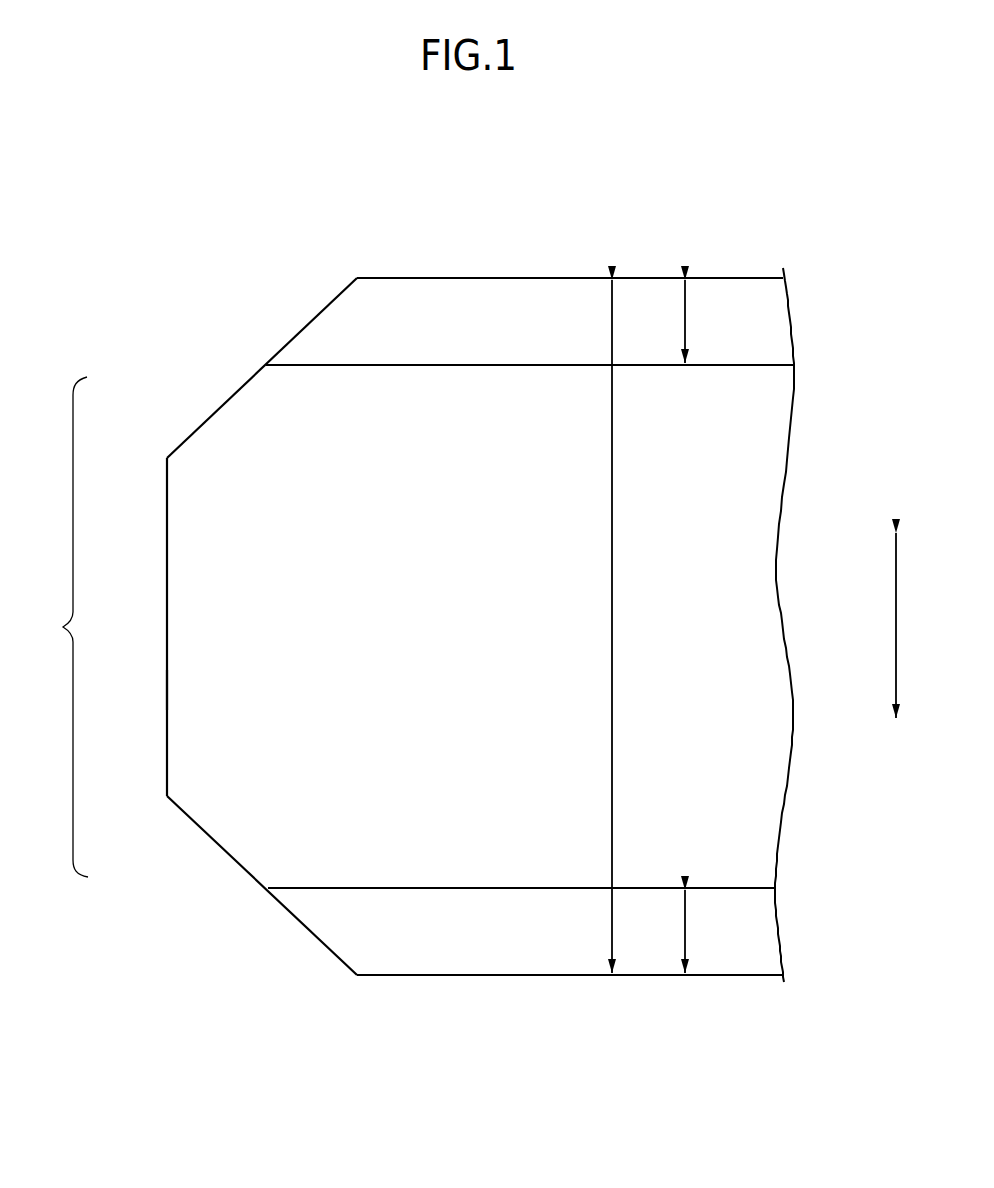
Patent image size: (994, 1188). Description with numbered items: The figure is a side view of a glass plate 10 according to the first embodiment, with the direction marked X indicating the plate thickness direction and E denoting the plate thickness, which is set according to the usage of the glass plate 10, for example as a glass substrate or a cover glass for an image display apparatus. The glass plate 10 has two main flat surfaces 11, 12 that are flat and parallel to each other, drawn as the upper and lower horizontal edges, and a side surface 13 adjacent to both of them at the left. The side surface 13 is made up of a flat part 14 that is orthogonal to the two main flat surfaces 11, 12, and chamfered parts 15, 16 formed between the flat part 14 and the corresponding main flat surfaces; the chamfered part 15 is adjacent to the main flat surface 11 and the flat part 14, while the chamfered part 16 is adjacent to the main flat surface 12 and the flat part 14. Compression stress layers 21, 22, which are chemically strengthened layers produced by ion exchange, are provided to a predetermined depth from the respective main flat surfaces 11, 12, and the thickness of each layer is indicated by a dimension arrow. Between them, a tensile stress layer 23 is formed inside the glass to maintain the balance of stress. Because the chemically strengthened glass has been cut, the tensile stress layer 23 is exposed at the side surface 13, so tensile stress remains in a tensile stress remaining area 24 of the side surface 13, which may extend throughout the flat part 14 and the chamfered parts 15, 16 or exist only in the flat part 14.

The glass plate 10 is at (243, 206).
The main flat surface 11 is at (490, 277).
The main flat surface 12 is at (490, 977).
The side surface 13 is at (196, 626).
The flat part 14 is at (167, 620).
The chamfered part 15 is at (228, 400).
The chamfered part 16 is at (230, 855).
The compression stress layer 21 is at (771, 322).
The compression stress layer 22 is at (773, 937).
The tensile stress layer 23 is at (772, 630).
The tensile stress remaining area 24 is at (168, 688).